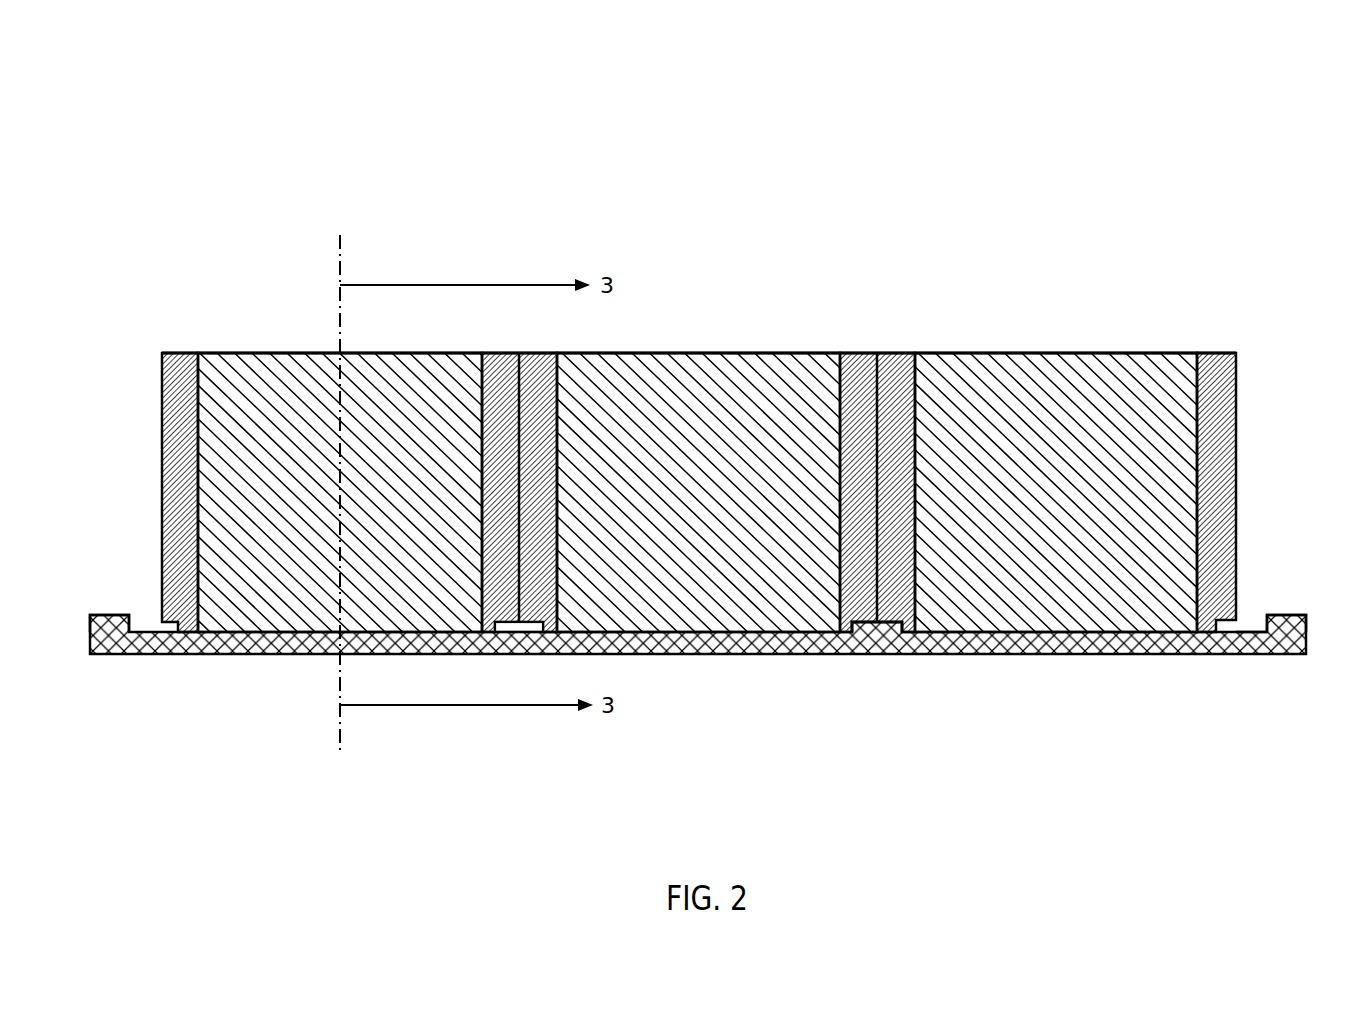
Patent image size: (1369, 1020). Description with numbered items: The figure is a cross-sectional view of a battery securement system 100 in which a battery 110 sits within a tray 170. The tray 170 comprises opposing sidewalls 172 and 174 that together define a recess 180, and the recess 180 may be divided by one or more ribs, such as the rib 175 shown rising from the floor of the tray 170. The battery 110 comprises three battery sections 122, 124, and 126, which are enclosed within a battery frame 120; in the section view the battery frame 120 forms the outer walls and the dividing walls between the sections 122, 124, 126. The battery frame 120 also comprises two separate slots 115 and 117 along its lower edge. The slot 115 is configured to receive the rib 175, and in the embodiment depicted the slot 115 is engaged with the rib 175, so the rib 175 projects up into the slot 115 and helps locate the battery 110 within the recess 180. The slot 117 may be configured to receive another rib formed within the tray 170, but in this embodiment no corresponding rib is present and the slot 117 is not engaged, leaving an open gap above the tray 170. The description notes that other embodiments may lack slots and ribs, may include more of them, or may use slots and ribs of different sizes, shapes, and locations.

The battery securement system 100 is at (684, 385).
The battery 110 is at (684, 470).
The slot 115 is at (915, 625).
The slot 117 is at (560, 625).
The battery frame 120 is at (177, 380).
The battery section 122 is at (1157, 370).
The battery section 124 is at (745, 368).
The battery section 126 is at (231, 363).
The tray 170 is at (707, 628).
The sidewall 172 is at (1290, 615).
The sidewall 174 is at (115, 615).
The rib 175 is at (883, 630).
The recess 180 is at (1250, 605).